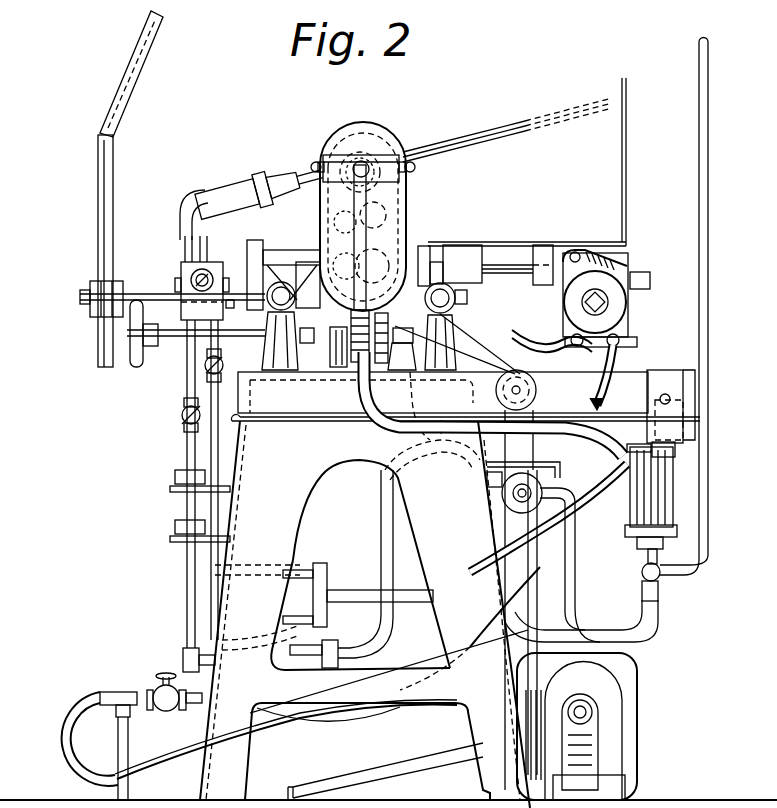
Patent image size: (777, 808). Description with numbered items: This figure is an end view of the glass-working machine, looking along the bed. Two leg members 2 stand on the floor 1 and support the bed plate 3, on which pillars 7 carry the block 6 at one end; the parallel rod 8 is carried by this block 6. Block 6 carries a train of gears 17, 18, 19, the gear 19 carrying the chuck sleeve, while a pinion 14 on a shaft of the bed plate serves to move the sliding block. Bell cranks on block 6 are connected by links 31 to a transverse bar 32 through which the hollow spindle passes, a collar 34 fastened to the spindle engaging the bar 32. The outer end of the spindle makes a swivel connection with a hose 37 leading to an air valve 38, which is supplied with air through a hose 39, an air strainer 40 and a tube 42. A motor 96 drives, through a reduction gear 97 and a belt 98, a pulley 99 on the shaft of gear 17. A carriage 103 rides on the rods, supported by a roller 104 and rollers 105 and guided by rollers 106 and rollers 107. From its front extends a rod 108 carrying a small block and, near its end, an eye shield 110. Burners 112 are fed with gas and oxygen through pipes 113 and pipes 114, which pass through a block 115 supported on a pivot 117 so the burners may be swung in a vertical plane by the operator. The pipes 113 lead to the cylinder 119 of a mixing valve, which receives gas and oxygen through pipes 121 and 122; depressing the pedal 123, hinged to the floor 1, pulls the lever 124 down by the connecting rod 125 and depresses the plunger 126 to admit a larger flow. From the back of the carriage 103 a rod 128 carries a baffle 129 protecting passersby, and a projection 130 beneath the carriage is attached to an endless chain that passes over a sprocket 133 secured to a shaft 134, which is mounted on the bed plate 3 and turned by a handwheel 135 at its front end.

The floor 1 is at (677, 800).
The leg members 2 is at (296, 500).
The bed plate 3 is at (310, 373).
The block 6 is at (293, 283).
The pillars 7 is at (266, 352).
The rod 8 is at (228, 314).
The pinion 14 is at (338, 372).
The gear 17 is at (392, 258).
The gear 18 is at (392, 212).
The gear 19 is at (385, 158).
The links 31 is at (312, 162).
The transverse bar 32 is at (345, 157).
The collar 34 is at (363, 155).
The hose 37 is at (620, 343).
The air valve 38 is at (620, 300).
The hose 39 is at (552, 332).
The air strainer 40 is at (548, 490).
The tube 42 is at (316, 712).
The motor 96 is at (622, 712).
The reduction gear 97 is at (505, 330).
The belt 98 is at (542, 604).
The pulley 99 is at (335, 258).
The carriage 103 is at (273, 246).
The roller 104 is at (255, 242).
The rollers 105 is at (466, 246).
The rollers 106 is at (440, 250).
The rollers 107 is at (462, 292).
The rod 108 is at (158, 282).
The eye shield 110 is at (134, 62).
The burners 112 is at (290, 182).
The pipes 113 is at (186, 384).
The pipes 114 is at (212, 445).
The block 115 is at (183, 273).
The pivot 117 is at (212, 272).
The cylinder 119 is at (680, 487).
The pipe 121 is at (652, 620).
The pipe 122 is at (699, 436).
The pedal 123 is at (398, 775).
The lever 124 is at (600, 412).
The connecting rod 125 is at (492, 528).
The plunger 126 is at (688, 372).
The rod 128 is at (522, 255).
The baffle 129 is at (622, 150).
The projection 130 is at (292, 309).
The sprocket 133 is at (386, 366).
The shaft 134 is at (356, 349).
The handwheel 135 is at (130, 362).